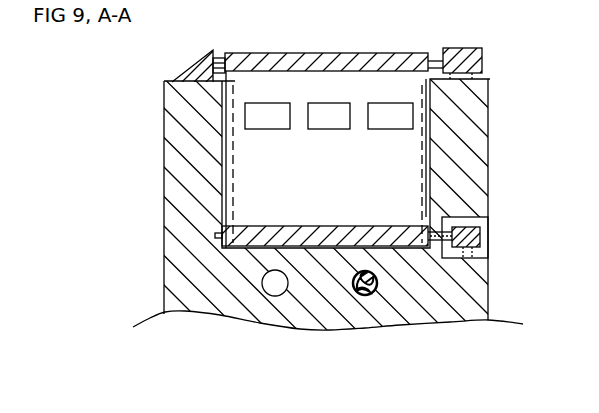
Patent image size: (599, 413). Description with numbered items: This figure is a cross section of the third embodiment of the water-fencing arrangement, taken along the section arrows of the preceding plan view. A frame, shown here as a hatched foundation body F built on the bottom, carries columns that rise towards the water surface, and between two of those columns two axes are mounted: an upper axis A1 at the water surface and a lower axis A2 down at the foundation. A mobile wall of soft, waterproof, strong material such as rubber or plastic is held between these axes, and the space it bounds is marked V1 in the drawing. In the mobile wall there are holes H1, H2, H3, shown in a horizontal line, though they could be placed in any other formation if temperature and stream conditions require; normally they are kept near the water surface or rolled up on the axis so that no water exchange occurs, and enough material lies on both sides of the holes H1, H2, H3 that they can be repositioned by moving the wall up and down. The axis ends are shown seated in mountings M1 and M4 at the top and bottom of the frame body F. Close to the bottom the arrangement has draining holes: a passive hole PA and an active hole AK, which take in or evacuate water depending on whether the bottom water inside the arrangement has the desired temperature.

The upper axis A1 is at (218, 58).
The lower axis A2 is at (433, 231).
The upper electrode terminal M1 is at (462, 48).
The lower electrode terminal M4 is at (482, 238).
The first hole H1 is at (272, 129).
The second hole H2 is at (330, 129).
The third hole H3 is at (390, 129).
The reaction chamber volume V1 is at (326, 159).
The housing body F is at (299, 200).
The passive hole PA is at (275, 296).
The active hole AK is at (365, 296).